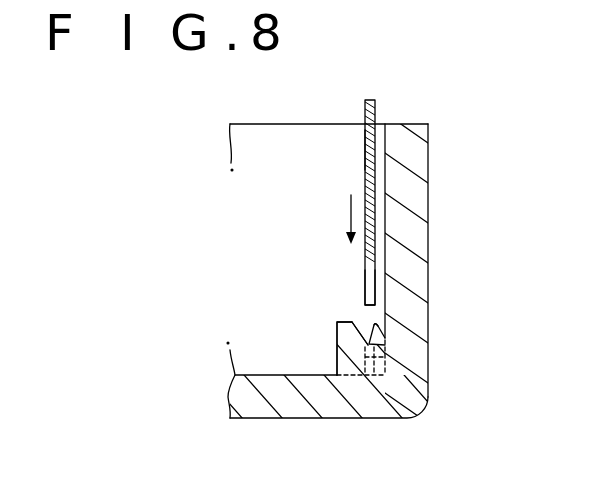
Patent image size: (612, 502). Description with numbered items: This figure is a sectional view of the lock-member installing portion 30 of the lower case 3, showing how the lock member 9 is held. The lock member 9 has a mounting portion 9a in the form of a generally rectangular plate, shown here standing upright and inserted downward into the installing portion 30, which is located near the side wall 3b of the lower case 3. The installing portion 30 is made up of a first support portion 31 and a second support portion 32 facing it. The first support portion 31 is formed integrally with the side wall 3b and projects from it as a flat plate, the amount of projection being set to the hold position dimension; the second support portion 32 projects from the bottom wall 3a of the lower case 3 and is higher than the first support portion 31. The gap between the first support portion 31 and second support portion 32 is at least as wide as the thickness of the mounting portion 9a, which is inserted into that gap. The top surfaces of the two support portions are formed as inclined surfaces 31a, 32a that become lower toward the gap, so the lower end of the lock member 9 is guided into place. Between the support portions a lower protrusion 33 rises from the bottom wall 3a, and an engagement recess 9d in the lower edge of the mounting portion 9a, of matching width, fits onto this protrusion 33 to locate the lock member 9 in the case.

The lower case 3 is at (265, 124).
The bottom wall of the lower case 3a is at (259, 412).
The side wall of the lower case 3b is at (421, 211).
The lock member 9 is at (379, 103).
The mounting portion 9a is at (364, 149).
The engagement recess 9d is at (364, 280).
The lock-member installing portion 30 is at (322, 324).
The first support portion 31 is at (385, 350).
The inclined surface of the first support portion 31a is at (380, 324).
The second support portion 32 is at (337, 345).
The inclined surface of the second support portion 32a is at (353, 322).
The lower protrusion 33 is at (388, 365).